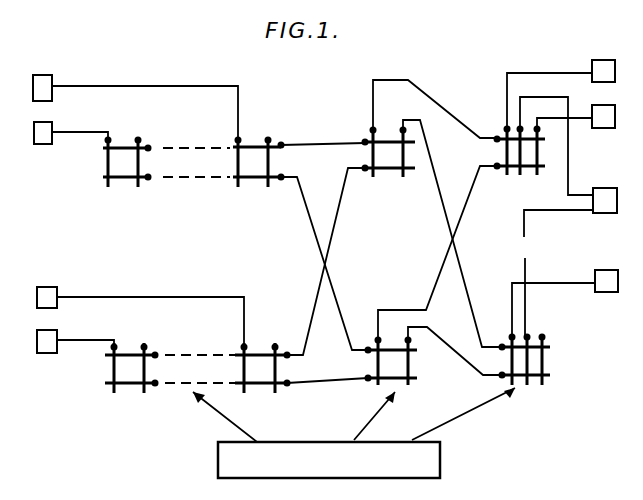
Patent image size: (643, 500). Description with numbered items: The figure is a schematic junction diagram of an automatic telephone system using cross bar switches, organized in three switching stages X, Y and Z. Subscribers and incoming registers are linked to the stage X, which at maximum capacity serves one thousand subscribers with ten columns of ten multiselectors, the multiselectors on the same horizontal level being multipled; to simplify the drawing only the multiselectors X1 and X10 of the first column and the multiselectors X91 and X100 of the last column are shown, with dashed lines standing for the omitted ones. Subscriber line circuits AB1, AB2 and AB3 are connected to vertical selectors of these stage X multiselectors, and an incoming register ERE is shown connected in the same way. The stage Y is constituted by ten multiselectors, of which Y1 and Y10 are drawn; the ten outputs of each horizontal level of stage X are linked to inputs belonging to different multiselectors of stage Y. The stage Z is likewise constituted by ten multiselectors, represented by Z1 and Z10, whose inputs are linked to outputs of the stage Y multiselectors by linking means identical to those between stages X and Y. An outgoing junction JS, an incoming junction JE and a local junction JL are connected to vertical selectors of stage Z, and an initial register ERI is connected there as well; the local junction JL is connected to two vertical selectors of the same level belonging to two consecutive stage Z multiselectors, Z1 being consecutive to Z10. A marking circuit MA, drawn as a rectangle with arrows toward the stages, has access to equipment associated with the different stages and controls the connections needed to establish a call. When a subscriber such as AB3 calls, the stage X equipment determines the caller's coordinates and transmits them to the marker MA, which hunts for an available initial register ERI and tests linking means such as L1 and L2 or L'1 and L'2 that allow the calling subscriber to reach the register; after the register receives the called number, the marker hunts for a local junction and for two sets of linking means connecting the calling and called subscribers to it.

The subscriber line circuit AB1 is at (45, 90).
The subscriber line circuit AB2 is at (49, 146).
The subscriber line circuit AB3 is at (50, 348).
The incoming trunk circuit ERE is at (48, 302).
The initial register ERI is at (603, 284).
The outgoing junction JS is at (561, 94).
The incoming junction JE is at (576, 117).
The local junction JL is at (568, 155).
The multiselector X91 is at (123, 158).
The multiselector X1 is at (250, 160).
The multiselector X100 is at (130, 370).
The multiselector X10 is at (256, 362).
The multiselector Y1 is at (389, 158).
The multiselector Y10 is at (400, 365).
The multiselector Z1 is at (528, 157).
The multiselector Z10 is at (535, 362).
The linking means L1 is at (327, 374).
The linking means L'1 is at (326, 261).
The linking means L2 is at (455, 351).
The linking means L'2 is at (437, 253).
The stage X is at (199, 265).
The stage Y is at (387, 255).
The stage Z is at (555, 273).
The marking circuit MA is at (354, 433).